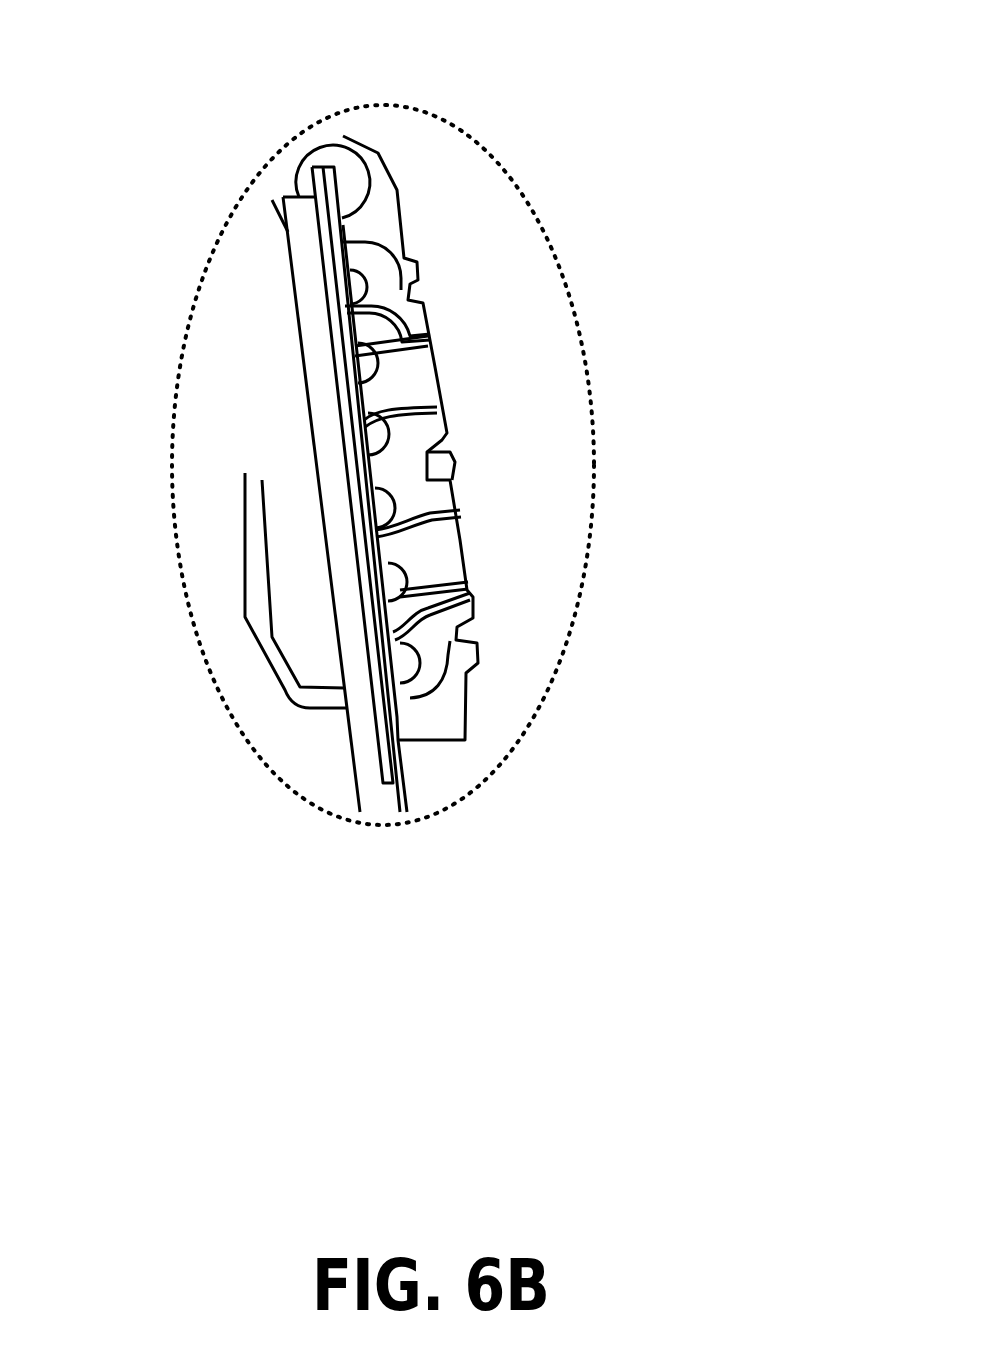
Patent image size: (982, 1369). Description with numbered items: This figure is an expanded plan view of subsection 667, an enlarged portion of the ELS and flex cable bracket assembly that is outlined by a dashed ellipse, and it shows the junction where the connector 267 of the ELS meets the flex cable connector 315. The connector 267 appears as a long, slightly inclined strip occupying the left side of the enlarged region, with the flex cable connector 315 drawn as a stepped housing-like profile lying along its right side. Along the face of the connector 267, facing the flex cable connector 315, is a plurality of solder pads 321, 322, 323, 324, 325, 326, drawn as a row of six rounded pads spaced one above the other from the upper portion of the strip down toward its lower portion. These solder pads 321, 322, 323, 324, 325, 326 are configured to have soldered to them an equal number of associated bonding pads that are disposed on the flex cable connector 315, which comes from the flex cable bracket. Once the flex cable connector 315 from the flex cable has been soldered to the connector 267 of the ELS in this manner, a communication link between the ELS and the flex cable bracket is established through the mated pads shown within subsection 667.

The subsection 667 is at (273, 170).
The connector 267 is at (302, 355).
The flex cable connector 315 is at (403, 233).
The solder pad 321 is at (353, 287).
The solder pad 322 is at (373, 365).
The solder pad 323 is at (375, 435).
The solder pad 324 is at (382, 510).
The solder pad 325 is at (388, 585).
The solder pad 326 is at (390, 663).